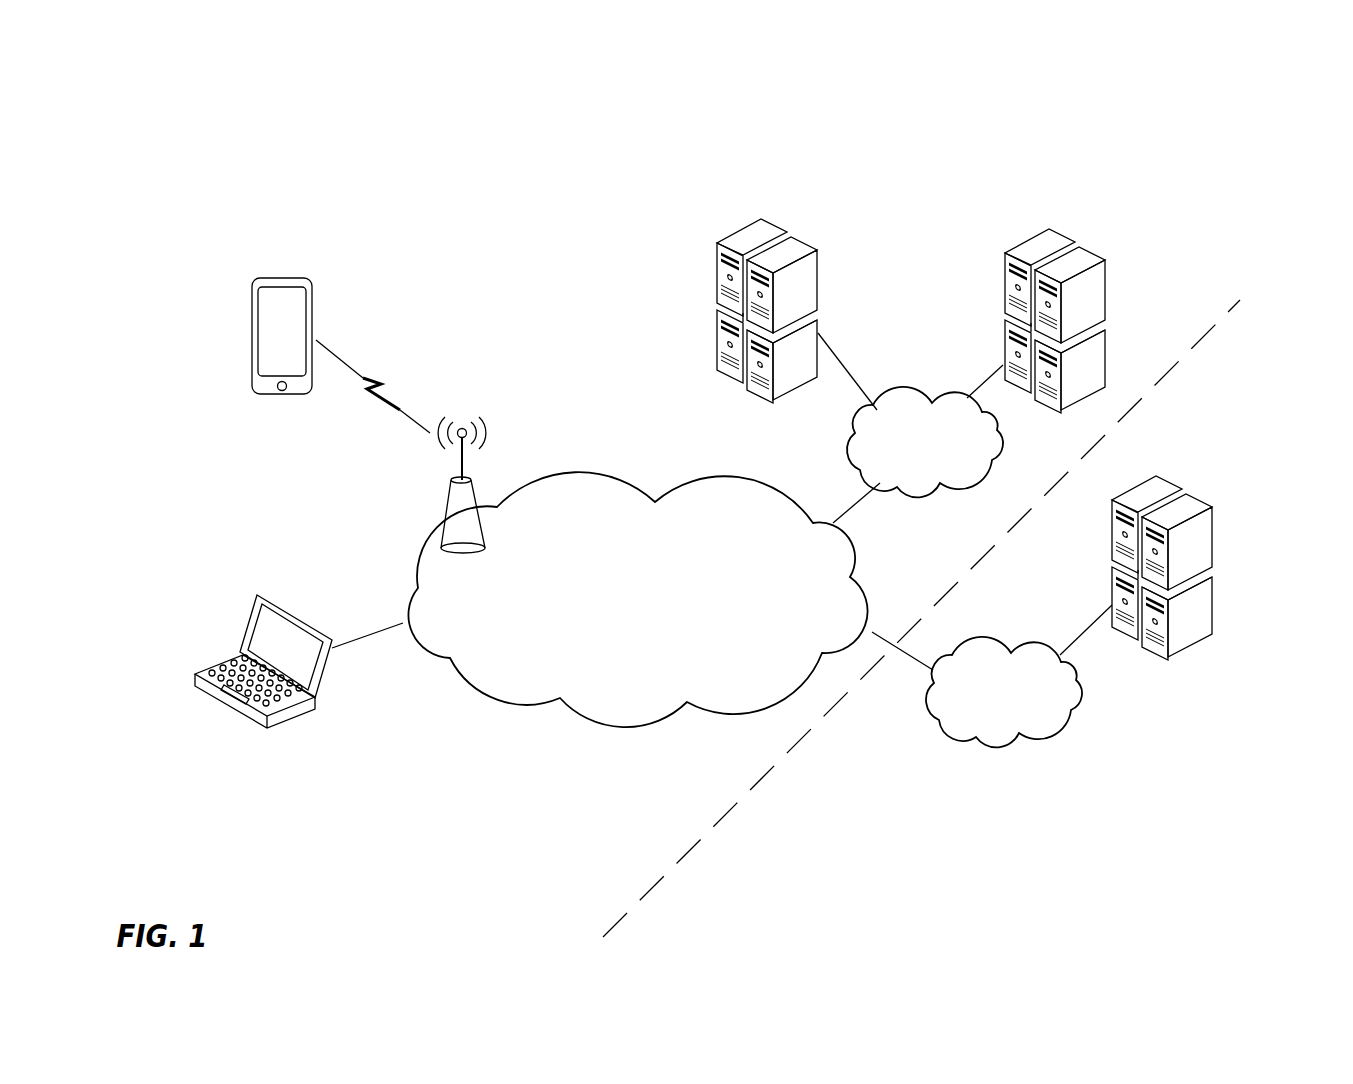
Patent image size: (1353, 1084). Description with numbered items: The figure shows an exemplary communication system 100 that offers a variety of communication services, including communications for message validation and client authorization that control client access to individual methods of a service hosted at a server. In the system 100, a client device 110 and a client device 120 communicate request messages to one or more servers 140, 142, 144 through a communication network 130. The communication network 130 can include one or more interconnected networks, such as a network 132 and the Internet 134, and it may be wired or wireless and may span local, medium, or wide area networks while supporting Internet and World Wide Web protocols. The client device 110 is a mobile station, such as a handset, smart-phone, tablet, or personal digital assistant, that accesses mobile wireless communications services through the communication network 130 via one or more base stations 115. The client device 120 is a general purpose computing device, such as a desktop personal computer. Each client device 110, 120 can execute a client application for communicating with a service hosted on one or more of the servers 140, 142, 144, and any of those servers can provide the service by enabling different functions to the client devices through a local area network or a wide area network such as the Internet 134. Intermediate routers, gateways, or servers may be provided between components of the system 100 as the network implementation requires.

The system 100 is at (387, 152).
The client device 110 is at (252, 297).
The base station 115 is at (445, 508).
The client device 120 is at (230, 712).
The communication network 130 is at (587, 720).
The network 132 is at (1003, 452).
The Internet 134 is at (988, 743).
The server 140 is at (818, 260).
The server 142 is at (1110, 282).
The server 144 is at (1213, 523).